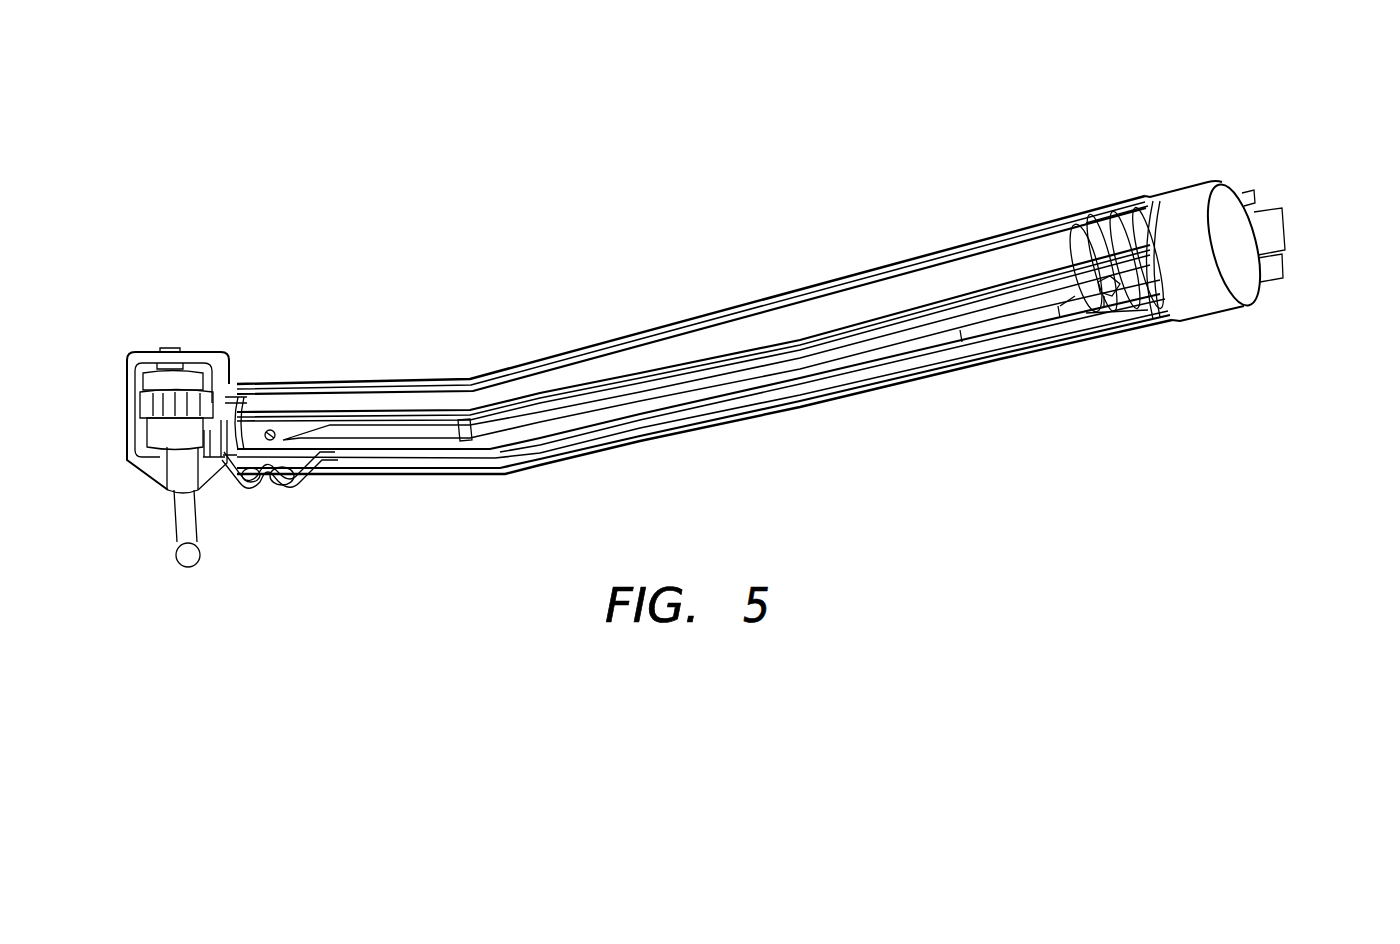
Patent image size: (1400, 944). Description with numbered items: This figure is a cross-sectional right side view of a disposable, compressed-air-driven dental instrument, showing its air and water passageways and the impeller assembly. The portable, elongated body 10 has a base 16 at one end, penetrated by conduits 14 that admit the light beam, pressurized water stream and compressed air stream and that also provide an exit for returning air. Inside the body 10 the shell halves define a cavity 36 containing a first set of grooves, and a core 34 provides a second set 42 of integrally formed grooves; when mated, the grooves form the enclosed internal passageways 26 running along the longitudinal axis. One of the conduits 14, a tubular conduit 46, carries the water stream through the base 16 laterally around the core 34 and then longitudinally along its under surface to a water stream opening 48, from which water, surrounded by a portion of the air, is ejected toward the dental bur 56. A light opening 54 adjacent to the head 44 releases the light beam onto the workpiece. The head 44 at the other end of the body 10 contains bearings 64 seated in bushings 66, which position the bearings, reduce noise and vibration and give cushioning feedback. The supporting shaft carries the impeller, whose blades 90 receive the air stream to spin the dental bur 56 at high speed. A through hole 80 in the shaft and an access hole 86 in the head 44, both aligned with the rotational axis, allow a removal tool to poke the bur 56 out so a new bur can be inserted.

The body 10 is at (757, 248).
The conduits 14 is at (1294, 207).
The base 16 is at (1181, 176).
The internal passageways 26 is at (1105, 280).
The core 34 is at (870, 305).
The cavity 36 is at (973, 283).
The second set of integrally formed grooves 42 is at (695, 420).
The head 44 is at (220, 350).
The tubular conduit 46 is at (1248, 198).
The water stream opening 48 is at (232, 478).
The light opening 54 is at (268, 505).
The dental bur 56 is at (166, 556).
The bearings 64 is at (163, 462).
The bushings 66 is at (160, 385).
The through hole 80 is at (171, 349).
The access hole 86 is at (180, 352).
The blades 90 is at (175, 407).